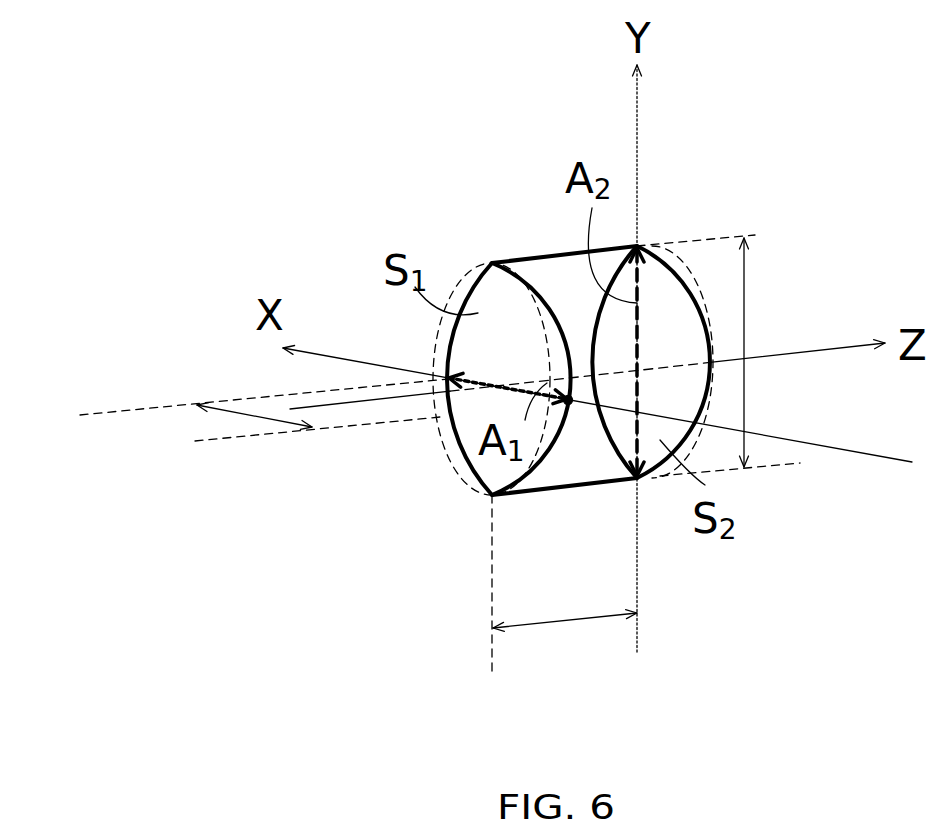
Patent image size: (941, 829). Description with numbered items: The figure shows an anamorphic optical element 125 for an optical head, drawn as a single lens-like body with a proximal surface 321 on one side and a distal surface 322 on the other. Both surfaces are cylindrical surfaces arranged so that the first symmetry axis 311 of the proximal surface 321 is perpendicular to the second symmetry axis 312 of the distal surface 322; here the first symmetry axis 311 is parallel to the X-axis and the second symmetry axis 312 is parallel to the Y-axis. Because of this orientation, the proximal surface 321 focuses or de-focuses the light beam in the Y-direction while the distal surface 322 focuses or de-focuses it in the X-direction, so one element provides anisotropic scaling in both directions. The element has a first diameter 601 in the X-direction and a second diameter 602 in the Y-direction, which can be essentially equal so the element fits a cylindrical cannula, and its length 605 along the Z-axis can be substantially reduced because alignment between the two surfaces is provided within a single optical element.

The anamorphic optical element 125 is at (433, 288).
The symmetry axis A1 311 is at (443, 447).
The symmetry axis A2 312 is at (640, 323).
The proximal surface S1 321 is at (522, 354).
The distal surface S2 322 is at (699, 364).
The diameter d1 601 is at (263, 418).
The diameter d2 602 is at (745, 410).
The length L 605 is at (612, 615).